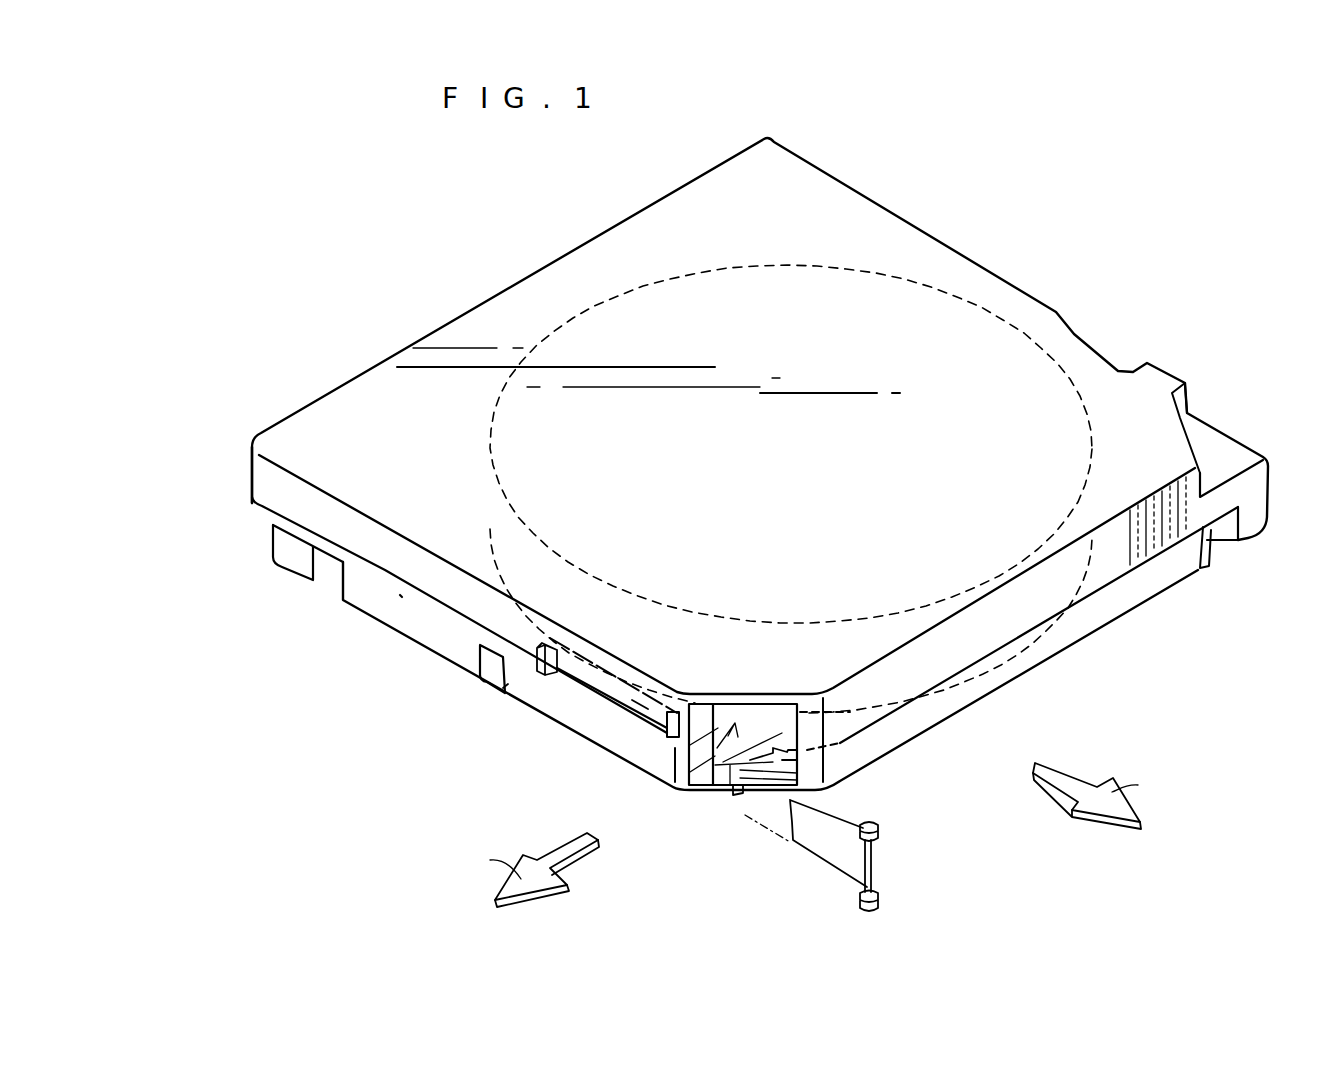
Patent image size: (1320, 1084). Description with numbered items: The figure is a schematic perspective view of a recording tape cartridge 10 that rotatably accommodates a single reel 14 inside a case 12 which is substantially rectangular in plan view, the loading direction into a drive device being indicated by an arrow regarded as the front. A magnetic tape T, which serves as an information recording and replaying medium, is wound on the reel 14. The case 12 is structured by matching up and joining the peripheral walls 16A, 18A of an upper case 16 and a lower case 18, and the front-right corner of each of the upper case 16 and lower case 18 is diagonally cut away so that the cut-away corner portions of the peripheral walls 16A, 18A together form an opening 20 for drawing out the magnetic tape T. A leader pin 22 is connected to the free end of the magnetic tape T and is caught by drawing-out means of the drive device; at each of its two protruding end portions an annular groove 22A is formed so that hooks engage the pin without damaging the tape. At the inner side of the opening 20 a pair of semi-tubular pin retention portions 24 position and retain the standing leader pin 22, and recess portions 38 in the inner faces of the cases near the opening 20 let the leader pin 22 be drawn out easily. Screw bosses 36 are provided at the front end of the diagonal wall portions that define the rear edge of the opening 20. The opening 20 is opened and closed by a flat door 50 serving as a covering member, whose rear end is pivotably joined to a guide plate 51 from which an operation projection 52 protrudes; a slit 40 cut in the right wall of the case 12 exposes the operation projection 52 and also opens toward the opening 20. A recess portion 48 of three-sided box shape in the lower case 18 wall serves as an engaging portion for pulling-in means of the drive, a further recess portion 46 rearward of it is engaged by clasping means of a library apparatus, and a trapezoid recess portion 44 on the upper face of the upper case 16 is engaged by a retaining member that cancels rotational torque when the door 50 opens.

The recording tape cartridge 10 is at (1096, 234).
The case 12 is at (820, 167).
The reel 14 is at (820, 372).
The upper case 16 is at (1065, 603).
The peripheral wall 16A is at (270, 485).
The lower case 18 is at (1025, 662).
The peripheral wall 18A is at (408, 616).
The opening 20 is at (710, 762).
The leader pin 22 is at (876, 825).
The annular groove 22A is at (883, 840).
The pin retention portion 24 is at (787, 748).
The screw boss 36 is at (676, 757).
The recess portion 38 is at (735, 795).
The slit 40 is at (580, 698).
The recess portion 44 is at (1102, 353).
The recess portion 46 is at (330, 566).
The recess portion 48 is at (492, 672).
The door 50 is at (645, 695).
The guide plate 51 is at (562, 670).
The operation projection 52 is at (505, 692).
The magnetic tape T is at (833, 848).